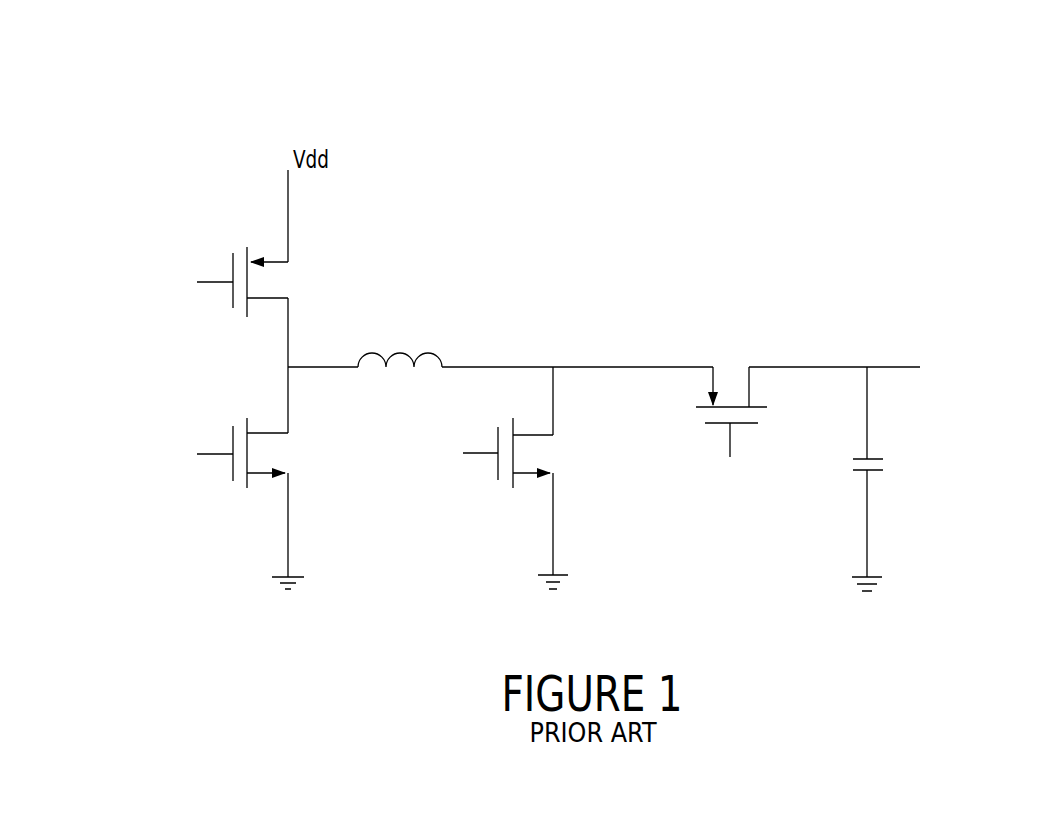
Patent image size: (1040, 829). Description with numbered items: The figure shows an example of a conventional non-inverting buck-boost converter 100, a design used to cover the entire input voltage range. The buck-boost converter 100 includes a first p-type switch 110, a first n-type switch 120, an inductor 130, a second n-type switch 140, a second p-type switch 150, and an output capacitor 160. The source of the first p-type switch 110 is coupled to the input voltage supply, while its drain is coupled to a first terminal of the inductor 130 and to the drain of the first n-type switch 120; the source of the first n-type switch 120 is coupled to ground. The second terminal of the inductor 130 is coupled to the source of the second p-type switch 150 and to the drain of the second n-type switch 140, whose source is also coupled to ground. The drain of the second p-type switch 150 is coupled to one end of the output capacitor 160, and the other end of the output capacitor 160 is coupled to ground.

The buck-boost converter 100 is at (940, 122).
The first p-type switch P1 110 is at (226, 266).
The first n-type switch N1 120 is at (226, 468).
The inductor L 130 is at (425, 352).
The second n-type switch N2 140 is at (505, 487).
The second p-type switch P2 150 is at (751, 336).
The output capacitor Cout 160 is at (878, 478).